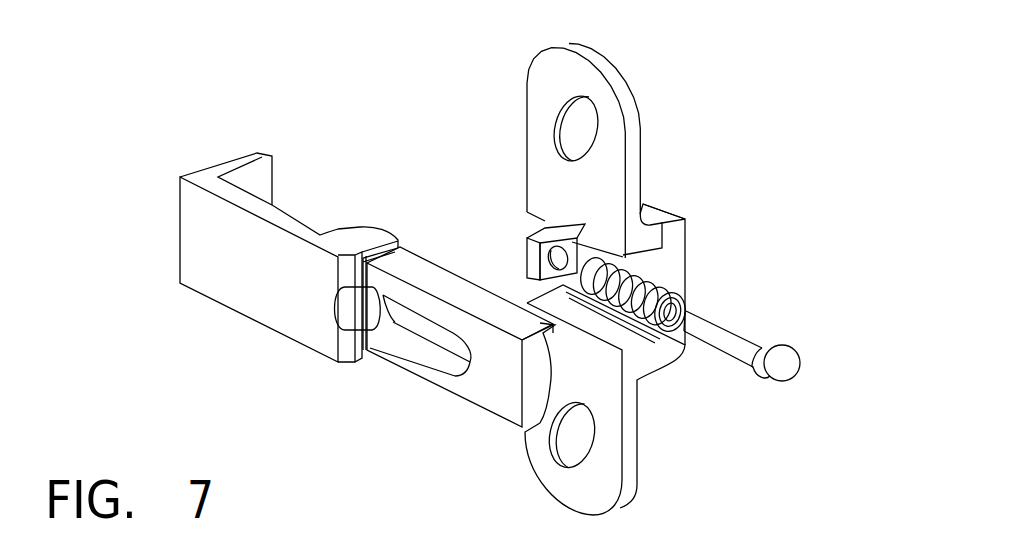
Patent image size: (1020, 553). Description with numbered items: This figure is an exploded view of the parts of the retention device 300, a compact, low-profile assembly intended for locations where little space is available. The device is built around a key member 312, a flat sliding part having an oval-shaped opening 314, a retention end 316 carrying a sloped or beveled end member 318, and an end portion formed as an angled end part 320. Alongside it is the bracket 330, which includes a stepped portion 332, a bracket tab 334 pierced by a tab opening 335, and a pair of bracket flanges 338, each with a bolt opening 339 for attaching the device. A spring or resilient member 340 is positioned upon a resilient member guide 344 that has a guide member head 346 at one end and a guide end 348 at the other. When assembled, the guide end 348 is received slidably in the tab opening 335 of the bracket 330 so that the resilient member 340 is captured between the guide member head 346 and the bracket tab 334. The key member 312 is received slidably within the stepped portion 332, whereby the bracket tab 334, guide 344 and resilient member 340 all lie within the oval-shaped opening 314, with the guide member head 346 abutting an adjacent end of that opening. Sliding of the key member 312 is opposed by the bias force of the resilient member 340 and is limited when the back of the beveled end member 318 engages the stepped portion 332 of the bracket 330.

The retention device 300 is at (362, 88).
The key member 312 is at (222, 148).
The oval-shaped opening 314 is at (423, 347).
The retention end 316 is at (493, 378).
The beveled end member 318 is at (550, 364).
The angled end part 320 is at (292, 208).
The bracket 330 is at (592, 50).
The stepped portion 332 is at (653, 212).
The bracket tab 334 is at (522, 236).
The tab opening 335 is at (527, 256).
The bracket flanges 338 is at (637, 447).
The bolt opening 339 is at (578, 442).
The resilient member 340 is at (680, 268).
The resilient member guide 344 is at (723, 340).
The guide member head 346 is at (787, 372).
The guide end 348 is at (688, 322).